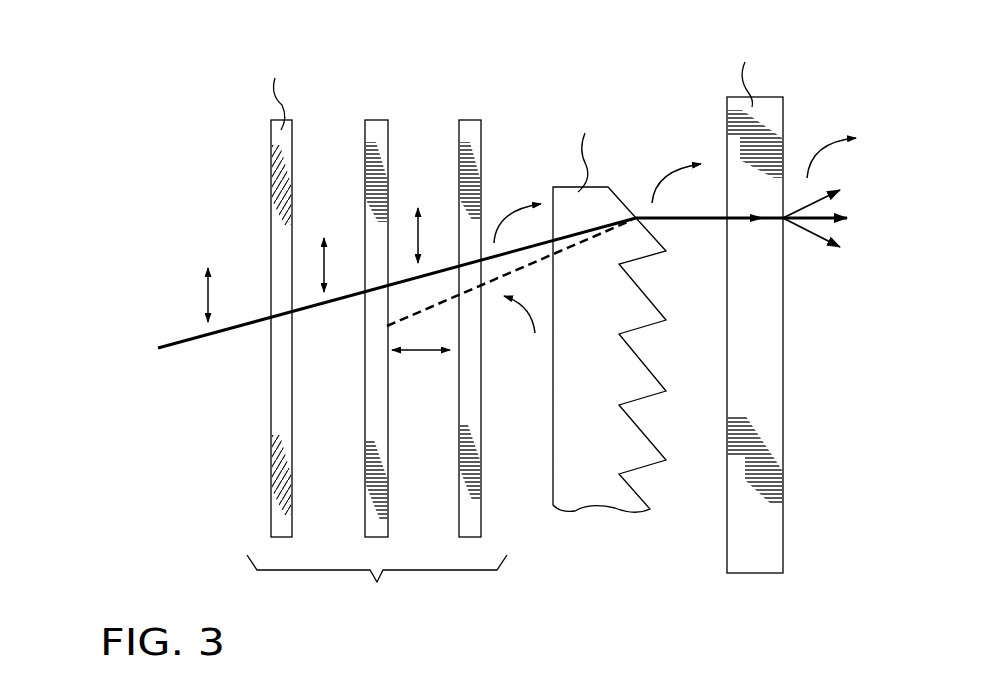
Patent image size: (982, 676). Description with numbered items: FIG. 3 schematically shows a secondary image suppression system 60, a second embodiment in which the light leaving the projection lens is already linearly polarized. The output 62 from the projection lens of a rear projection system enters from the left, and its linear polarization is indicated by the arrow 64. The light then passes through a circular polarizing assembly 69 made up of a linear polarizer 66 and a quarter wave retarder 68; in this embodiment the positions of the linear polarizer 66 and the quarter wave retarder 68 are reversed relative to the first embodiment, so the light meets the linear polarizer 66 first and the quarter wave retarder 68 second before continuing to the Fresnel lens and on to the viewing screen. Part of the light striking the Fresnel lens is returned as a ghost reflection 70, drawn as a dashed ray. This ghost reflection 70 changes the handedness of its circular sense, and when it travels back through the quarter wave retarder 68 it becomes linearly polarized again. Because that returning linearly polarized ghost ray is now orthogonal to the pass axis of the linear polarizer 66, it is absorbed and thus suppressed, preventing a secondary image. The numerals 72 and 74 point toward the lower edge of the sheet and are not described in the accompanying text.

The secondary image suppression system 60 is at (229, 104).
The output from projection lens 62 is at (235, 330).
The arrow 64 is at (203, 295).
The linear polarizer 66 is at (372, 128).
The quarter wave retarder 68 is at (473, 128).
The circular polarizing assembly 69 is at (377, 584).
The ghost reflection 70 is at (588, 240).
The light path toward viewer 72 is at (552, 674).
The light path toward viewer 74 is at (679, 674).